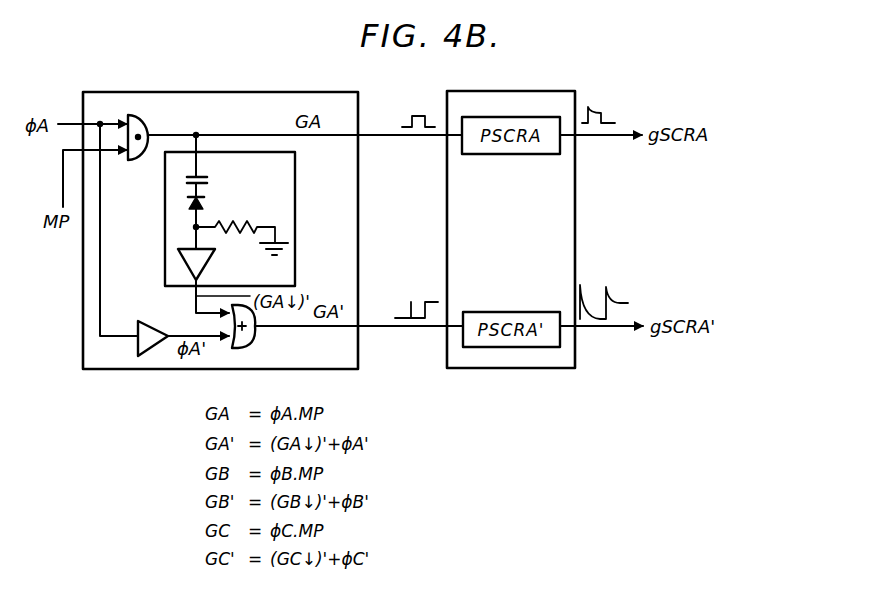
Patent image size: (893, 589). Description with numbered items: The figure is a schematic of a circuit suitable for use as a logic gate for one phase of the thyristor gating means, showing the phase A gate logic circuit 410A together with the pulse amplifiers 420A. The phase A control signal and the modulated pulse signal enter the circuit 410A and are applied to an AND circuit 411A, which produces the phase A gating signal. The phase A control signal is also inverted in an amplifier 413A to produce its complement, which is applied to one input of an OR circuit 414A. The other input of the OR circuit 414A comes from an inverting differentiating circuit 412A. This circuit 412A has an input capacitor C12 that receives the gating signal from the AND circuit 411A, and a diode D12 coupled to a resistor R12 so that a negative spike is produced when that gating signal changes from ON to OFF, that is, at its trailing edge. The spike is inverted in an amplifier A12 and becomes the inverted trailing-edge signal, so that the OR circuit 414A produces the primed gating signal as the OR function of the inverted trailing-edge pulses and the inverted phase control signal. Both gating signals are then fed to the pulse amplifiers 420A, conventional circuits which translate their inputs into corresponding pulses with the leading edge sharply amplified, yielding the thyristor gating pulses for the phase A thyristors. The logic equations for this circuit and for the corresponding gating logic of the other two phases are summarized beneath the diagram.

The phase A gate logic circuit 410A is at (242, 92).
The AND circuit 411A is at (146, 118).
The inverting differentiating circuit 412A is at (295, 189).
The amplifier 413A is at (152, 315).
The OR circuit 414A is at (252, 344).
The pulse amplifiers 420A is at (485, 91).
The input capacitor C12 is at (207, 180).
The diode D12 is at (208, 200).
The resistor R12 is at (253, 226).
The amplifier A12 is at (207, 260).